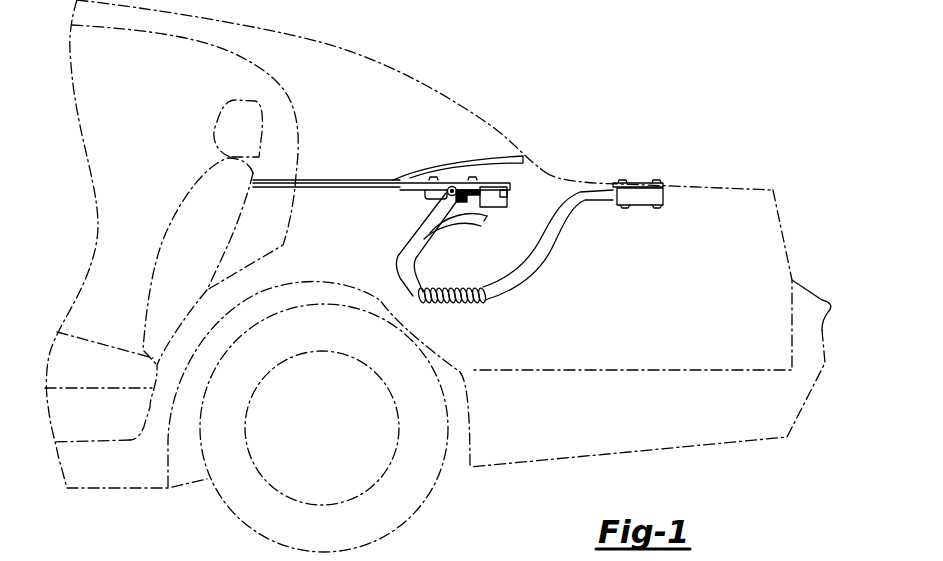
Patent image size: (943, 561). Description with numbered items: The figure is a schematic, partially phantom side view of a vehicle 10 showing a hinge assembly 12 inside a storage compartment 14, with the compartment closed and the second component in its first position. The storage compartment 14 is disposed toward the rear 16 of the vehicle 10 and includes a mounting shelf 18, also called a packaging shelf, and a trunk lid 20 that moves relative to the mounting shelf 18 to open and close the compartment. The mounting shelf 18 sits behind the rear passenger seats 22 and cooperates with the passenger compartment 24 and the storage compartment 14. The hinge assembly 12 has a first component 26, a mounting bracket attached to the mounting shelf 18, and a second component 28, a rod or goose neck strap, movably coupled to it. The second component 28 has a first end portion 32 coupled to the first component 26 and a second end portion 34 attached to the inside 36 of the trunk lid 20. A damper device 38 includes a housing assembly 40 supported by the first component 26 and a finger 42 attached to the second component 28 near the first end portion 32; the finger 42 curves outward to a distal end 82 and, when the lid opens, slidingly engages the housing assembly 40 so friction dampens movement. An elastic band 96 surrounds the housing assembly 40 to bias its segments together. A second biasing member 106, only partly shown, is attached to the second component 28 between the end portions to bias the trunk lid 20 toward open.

The vehicle 10 is at (512, 30).
The hinge assembly 12 is at (485, 220).
The storage compartment 14 is at (752, 224).
The rear 16 is at (821, 291).
The mounting shelf 18 is at (360, 181).
The trunk lid 20 is at (730, 183).
The rear passenger seats 22 is at (192, 190).
The passenger compartment 24 is at (124, 204).
The first component 26 is at (543, 169).
The second component 28 is at (545, 245).
The first end portion 32 is at (444, 197).
The second end portion 34 is at (663, 197).
The inside of the trunk lid 36 is at (617, 193).
The damper device 38 is at (477, 246).
The housing assembly 40 is at (499, 210).
The finger 42 is at (408, 248).
The distal end 82 is at (484, 216).
The elastic band 96 is at (483, 190).
The second biasing member 106 is at (485, 296).